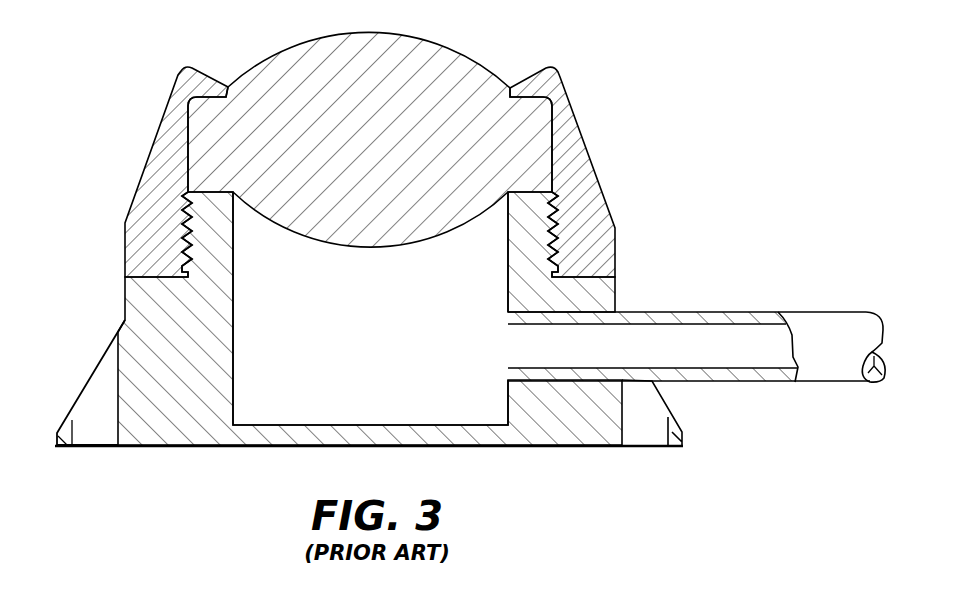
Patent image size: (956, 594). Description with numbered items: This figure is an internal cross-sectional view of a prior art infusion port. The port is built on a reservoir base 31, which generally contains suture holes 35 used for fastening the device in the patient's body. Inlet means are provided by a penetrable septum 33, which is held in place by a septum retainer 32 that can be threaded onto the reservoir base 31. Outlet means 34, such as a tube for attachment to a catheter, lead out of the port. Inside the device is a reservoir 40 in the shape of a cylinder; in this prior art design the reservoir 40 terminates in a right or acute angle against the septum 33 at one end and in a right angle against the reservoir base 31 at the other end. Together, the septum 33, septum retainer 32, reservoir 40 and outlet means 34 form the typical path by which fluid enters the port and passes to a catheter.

The reservoir base 31 is at (140, 295).
The septum retainer 32 is at (155, 181).
The penetrable septum 33 is at (417, 53).
The outlet means 34 is at (718, 320).
The suture holes 35 is at (652, 410).
The reservoir 40 is at (356, 344).